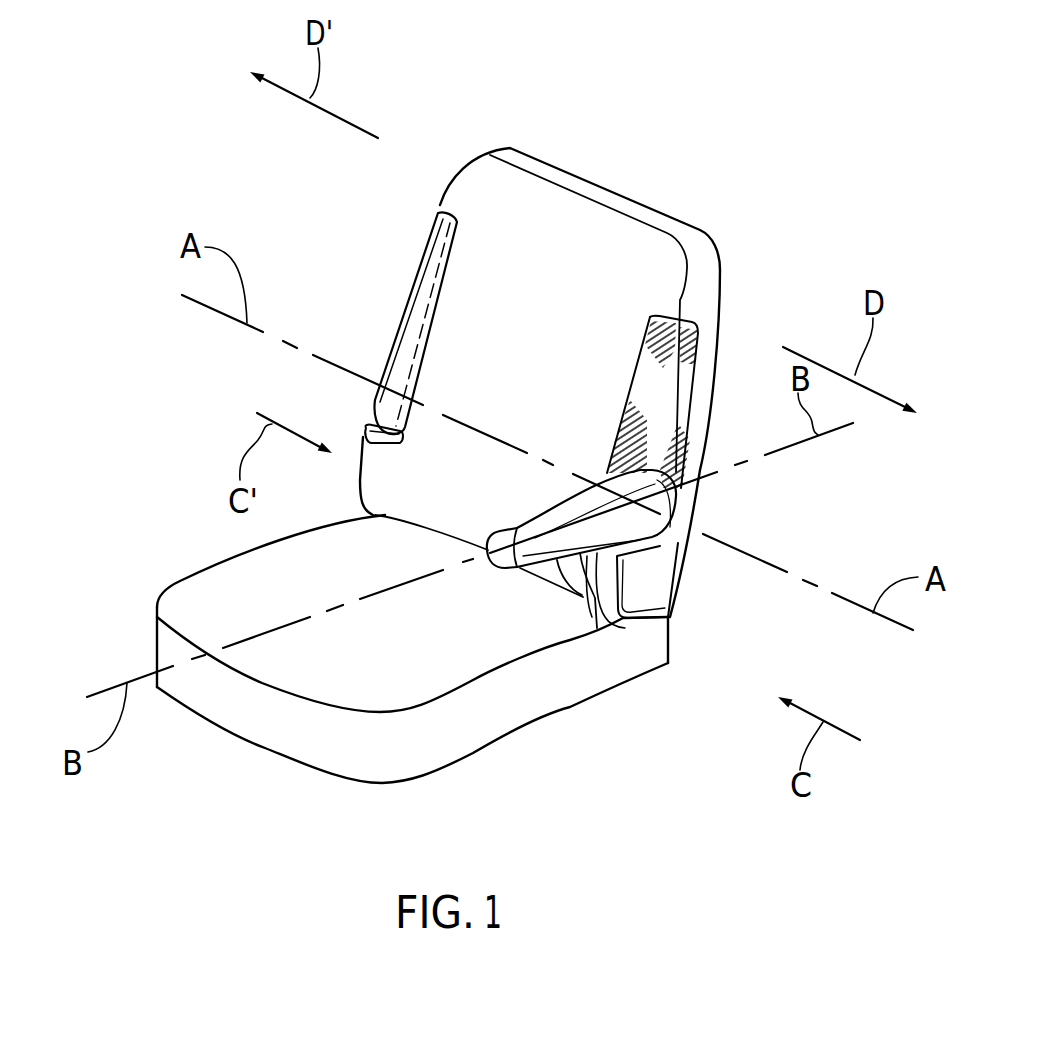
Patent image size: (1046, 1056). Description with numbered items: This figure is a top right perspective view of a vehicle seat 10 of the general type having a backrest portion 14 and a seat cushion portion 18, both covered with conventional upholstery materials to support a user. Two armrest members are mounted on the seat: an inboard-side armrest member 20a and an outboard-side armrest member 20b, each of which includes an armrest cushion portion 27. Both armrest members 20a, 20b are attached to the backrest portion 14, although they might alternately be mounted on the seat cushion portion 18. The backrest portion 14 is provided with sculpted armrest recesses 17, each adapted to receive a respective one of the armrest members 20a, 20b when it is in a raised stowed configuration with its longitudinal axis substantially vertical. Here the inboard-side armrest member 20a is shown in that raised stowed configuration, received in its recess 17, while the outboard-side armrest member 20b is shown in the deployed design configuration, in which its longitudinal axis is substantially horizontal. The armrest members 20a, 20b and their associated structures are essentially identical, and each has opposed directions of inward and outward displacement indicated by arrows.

The vehicle seat 10 is at (300, 391).
The backrest portion 14 is at (600, 240).
The sculpted armrest recesses 17 is at (647, 392).
The seat cushion portion 18 is at (310, 670).
The inboard-side armrest member 20a is at (405, 344).
The outboard-side armrest member 20b is at (687, 543).
The armrest cushion portion 27 is at (422, 270).